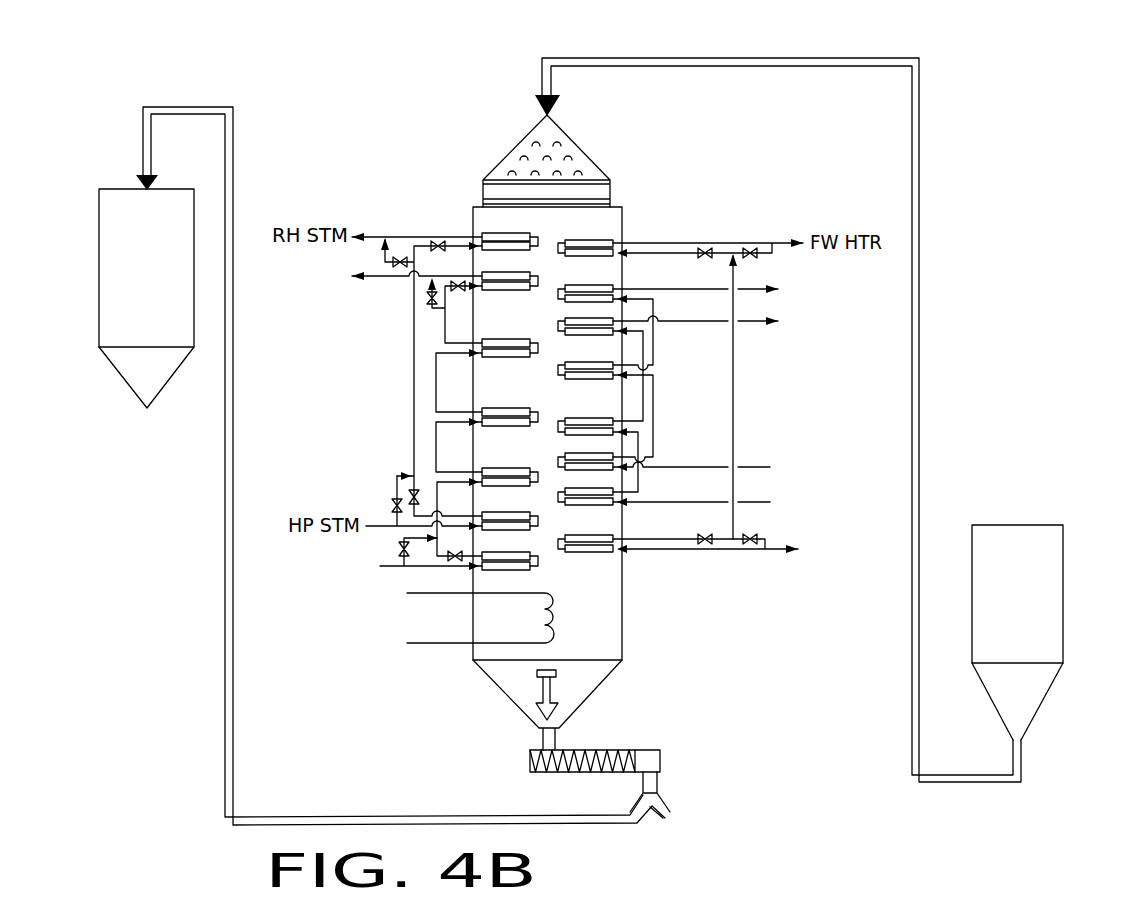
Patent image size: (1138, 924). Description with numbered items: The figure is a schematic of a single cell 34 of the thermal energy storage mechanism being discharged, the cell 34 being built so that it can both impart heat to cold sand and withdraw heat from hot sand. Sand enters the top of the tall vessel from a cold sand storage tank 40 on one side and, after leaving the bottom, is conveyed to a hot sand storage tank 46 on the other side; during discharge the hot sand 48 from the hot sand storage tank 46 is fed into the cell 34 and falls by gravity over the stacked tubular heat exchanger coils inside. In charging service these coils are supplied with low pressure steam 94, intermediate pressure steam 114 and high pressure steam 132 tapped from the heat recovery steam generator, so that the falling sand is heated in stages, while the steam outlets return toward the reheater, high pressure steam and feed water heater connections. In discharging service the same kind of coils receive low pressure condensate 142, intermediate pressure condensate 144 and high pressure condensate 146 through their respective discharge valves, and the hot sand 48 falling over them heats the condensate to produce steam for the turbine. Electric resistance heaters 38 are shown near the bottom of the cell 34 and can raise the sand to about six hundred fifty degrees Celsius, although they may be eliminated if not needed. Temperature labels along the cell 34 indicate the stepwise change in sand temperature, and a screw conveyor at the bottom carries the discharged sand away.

The hot sand 48 is at (736, 57).
The cell 34 is at (618, 207).
The cold sand storage tank 40 is at (99, 263).
The hot sand storage tank 46 is at (1065, 587).
The high pressure steam 132 is at (388, 280).
The intermediate pressure steam 114 is at (706, 286).
The low pressure steam 94 is at (716, 323).
The intermediate pressure condensate 144 is at (667, 466).
The low pressure condensate 142 is at (676, 504).
The high pressure condensate 146 is at (388, 570).
The electrical resistance heaters 38 is at (500, 650).